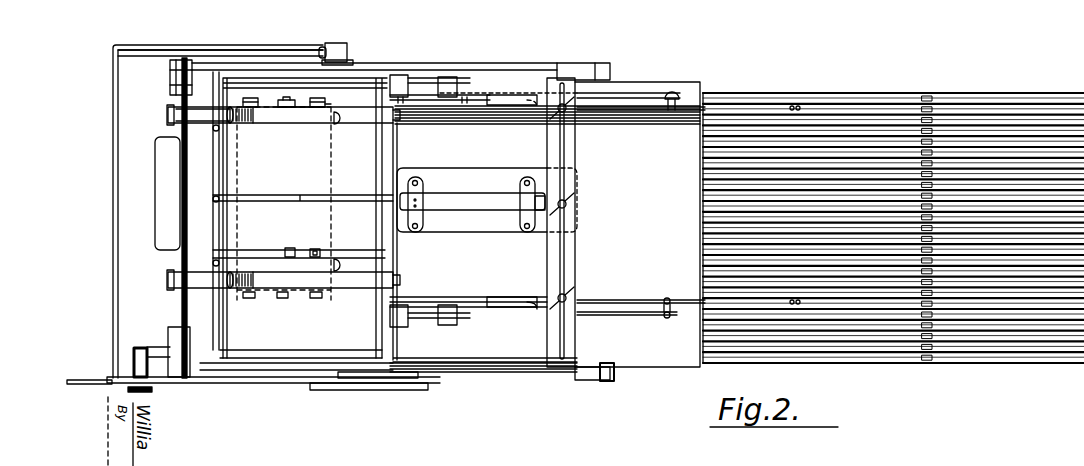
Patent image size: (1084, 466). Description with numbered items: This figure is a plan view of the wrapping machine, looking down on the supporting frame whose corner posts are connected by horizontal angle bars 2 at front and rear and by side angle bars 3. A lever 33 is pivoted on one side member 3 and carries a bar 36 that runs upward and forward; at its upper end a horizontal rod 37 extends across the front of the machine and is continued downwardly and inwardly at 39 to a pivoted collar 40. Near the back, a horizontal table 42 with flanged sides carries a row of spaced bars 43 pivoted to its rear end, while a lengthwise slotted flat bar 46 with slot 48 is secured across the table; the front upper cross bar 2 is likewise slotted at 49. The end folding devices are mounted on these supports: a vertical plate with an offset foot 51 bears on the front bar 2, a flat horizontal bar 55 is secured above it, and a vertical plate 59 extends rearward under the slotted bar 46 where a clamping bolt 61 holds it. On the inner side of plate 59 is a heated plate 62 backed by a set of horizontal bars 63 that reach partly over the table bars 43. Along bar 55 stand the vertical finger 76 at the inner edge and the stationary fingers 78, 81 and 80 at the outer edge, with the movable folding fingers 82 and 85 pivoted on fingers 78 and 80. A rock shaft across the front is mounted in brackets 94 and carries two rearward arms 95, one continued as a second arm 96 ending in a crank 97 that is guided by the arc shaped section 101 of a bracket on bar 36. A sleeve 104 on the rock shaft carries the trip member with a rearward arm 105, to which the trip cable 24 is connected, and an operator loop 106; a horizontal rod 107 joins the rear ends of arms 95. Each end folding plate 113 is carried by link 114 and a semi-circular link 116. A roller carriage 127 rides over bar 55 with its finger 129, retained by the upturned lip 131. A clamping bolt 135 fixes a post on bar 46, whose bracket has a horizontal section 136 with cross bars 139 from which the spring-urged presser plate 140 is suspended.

The horizontal angle bar 2 is at (223, 315).
The side angle bar 3 is at (410, 68).
The trip cable 24 is at (320, 250).
The lever 33 is at (360, 386).
The bar 36 is at (183, 385).
The horizontal rod 37 is at (113, 172).
The downwardly and inwardly extended portion of rod 39 is at (203, 52).
The collar 40 is at (340, 43).
The table 42 is at (652, 355).
The spaced apart bars 43 is at (878, 345).
The flat bar 46 is at (577, 165).
The slot 48 is at (565, 255).
The slot 49 is at (222, 230).
The laterally offset foot 51 is at (213, 132).
The flat horizontal bar 55 is at (318, 110).
The vertical plate 59 is at (636, 93).
The clamping bolt 61 is at (578, 116).
The heated plate 62 is at (505, 108).
The horizontal bars 63 is at (690, 111).
The vertical finger 76 is at (341, 122).
The vertical finger 78 is at (326, 110).
The vertical finger 80 is at (240, 121).
The vertical finger 81 is at (285, 108).
The movable folding finger 82 is at (325, 100).
The second folding finger 85 is at (244, 97).
The brackets 94 is at (187, 58).
The arms 95 is at (170, 73).
The second arm 96 is at (158, 347).
The rod or crank 97 is at (133, 358).
The arc shaped section 101 is at (80, 384).
The sleeve 104 is at (175, 303).
The rearwardly extending arm 105 is at (289, 248).
The loop 106 is at (155, 210).
The horizontal rod 107 is at (304, 203).
The end folding plate 113 is at (438, 108).
The link 114 is at (458, 76).
The semi-circular link 116 is at (440, 78).
The roller carriage 127 is at (173, 121).
The finger 129 is at (232, 125).
The upturned lip 131 is at (168, 116).
The clamping bolt 135 is at (572, 206).
The horizontal section 136 is at (468, 198).
The cross bars 139 is at (424, 220).
The presser plate 140 is at (482, 232).